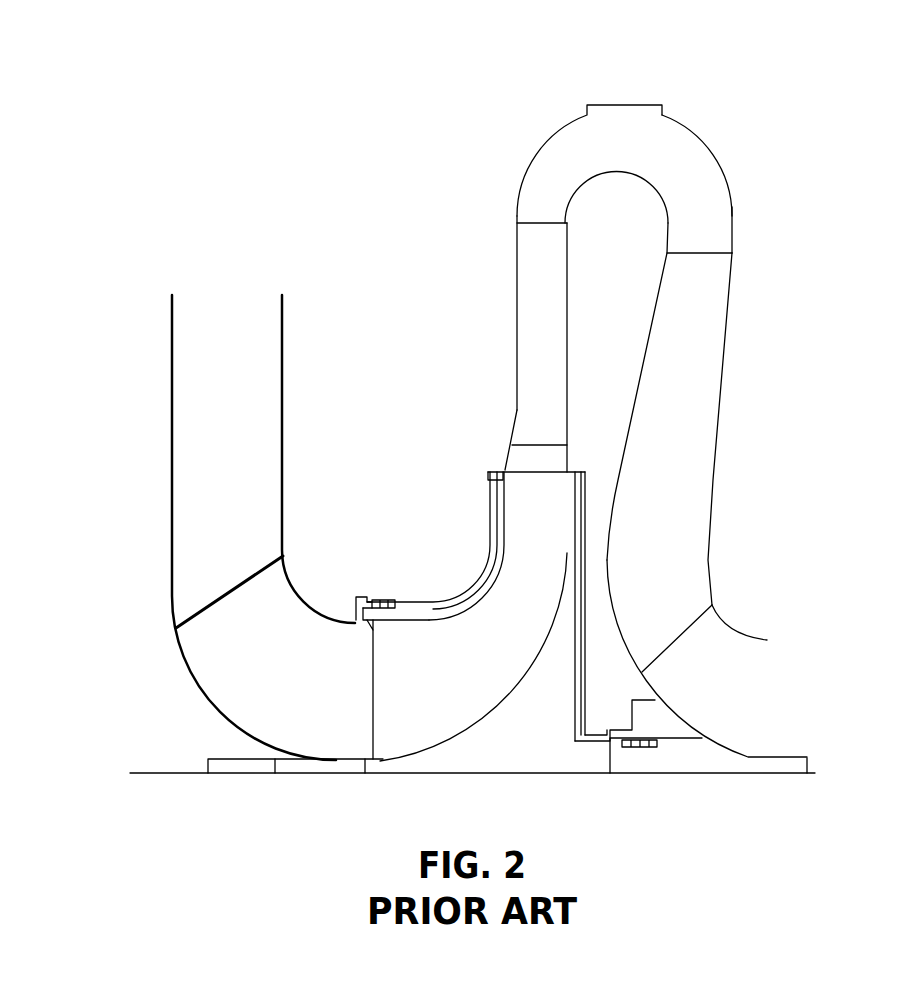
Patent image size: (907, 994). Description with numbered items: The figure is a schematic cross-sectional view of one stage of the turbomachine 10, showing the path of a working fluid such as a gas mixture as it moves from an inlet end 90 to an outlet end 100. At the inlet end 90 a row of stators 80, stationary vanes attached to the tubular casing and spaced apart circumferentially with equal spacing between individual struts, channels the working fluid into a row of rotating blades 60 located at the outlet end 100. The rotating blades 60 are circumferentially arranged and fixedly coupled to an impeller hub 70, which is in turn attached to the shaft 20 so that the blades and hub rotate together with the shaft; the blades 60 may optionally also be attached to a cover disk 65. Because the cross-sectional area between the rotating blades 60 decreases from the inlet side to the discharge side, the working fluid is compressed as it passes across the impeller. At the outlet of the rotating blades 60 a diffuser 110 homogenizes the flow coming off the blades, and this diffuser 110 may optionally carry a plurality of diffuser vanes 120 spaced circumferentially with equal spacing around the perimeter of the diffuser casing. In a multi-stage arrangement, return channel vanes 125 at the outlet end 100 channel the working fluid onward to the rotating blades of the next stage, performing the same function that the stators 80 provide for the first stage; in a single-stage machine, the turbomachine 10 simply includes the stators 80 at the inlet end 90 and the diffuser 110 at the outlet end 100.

The turbomachine 10 is at (822, 96).
The shaft 20 is at (680, 755).
The rotating blades 60 is at (477, 669).
The cover disk 65 is at (405, 617).
The impeller hub 70 is at (546, 739).
The stators 80 is at (233, 481).
The inlet end 90 is at (254, 270).
The outlet end 100 is at (777, 683).
The diffuser 110 is at (543, 460).
The diffuser vanes 120 is at (543, 342).
The return channel vanes 125 is at (693, 444).